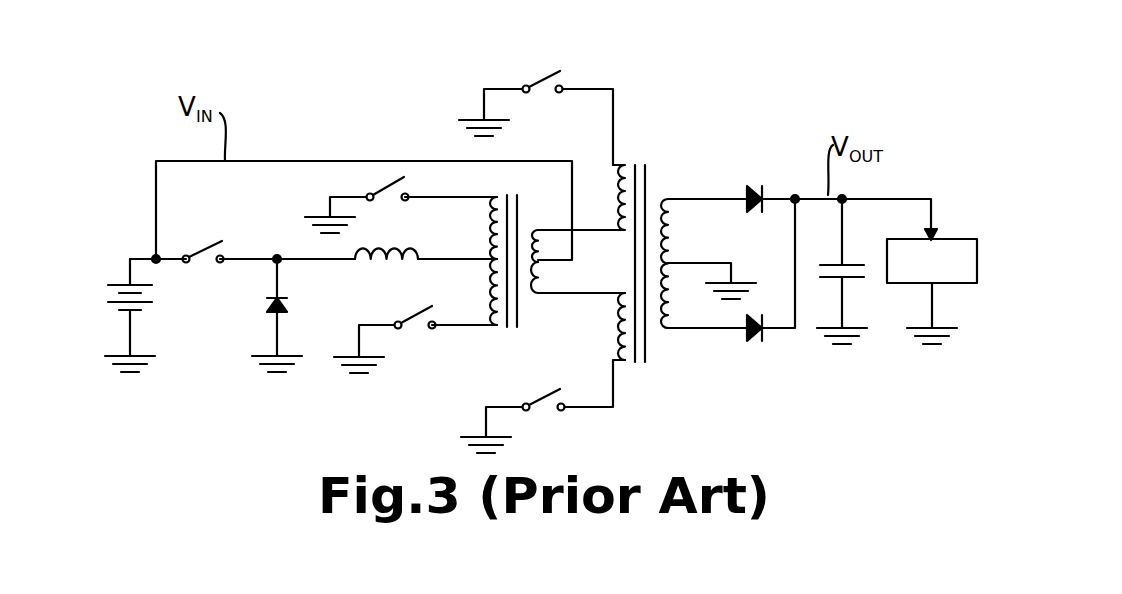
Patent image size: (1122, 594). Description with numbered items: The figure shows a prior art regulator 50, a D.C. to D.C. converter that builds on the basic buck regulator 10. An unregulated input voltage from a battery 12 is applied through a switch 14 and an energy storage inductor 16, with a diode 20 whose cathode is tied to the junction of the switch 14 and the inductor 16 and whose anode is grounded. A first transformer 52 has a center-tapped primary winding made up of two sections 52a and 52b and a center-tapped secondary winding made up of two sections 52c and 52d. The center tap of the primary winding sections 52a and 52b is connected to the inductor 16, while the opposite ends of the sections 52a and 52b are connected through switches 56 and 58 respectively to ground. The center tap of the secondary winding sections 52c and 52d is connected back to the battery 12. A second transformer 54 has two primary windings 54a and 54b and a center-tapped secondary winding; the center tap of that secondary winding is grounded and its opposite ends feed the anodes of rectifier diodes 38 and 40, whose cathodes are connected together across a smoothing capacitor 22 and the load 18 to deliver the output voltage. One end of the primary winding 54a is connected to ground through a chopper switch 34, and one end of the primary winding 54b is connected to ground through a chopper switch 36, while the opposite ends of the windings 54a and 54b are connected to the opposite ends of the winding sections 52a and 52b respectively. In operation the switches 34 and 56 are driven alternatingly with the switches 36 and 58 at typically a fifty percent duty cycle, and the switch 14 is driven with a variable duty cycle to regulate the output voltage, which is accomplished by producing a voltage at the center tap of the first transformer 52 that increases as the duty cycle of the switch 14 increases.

The buck regulator 10 is at (276, 388).
The battery 12 is at (148, 298).
The switch 14 is at (212, 246).
The energy storage inductor 16 is at (367, 251).
The load 18 is at (957, 238).
The diode 20 is at (267, 308).
The smoothing capacitor 22 is at (852, 280).
The chopper switch 34 is at (548, 42).
The chopper switch 36 is at (548, 395).
The rectifier diode 38 is at (752, 192).
The rectifier diode 40 is at (752, 335).
The regulator 50 is at (478, 78).
The first transformer 52 is at (507, 338).
The primary winding section 52a is at (488, 222).
The primary winding section 52b is at (488, 285).
The secondary winding section 52c is at (538, 230).
The secondary winding section 52d is at (544, 278).
The second transformer 54 is at (663, 183).
The primary winding 54a is at (620, 165).
The primary winding 54b is at (625, 362).
The switch 56 is at (388, 183).
The switch 58 is at (420, 308).